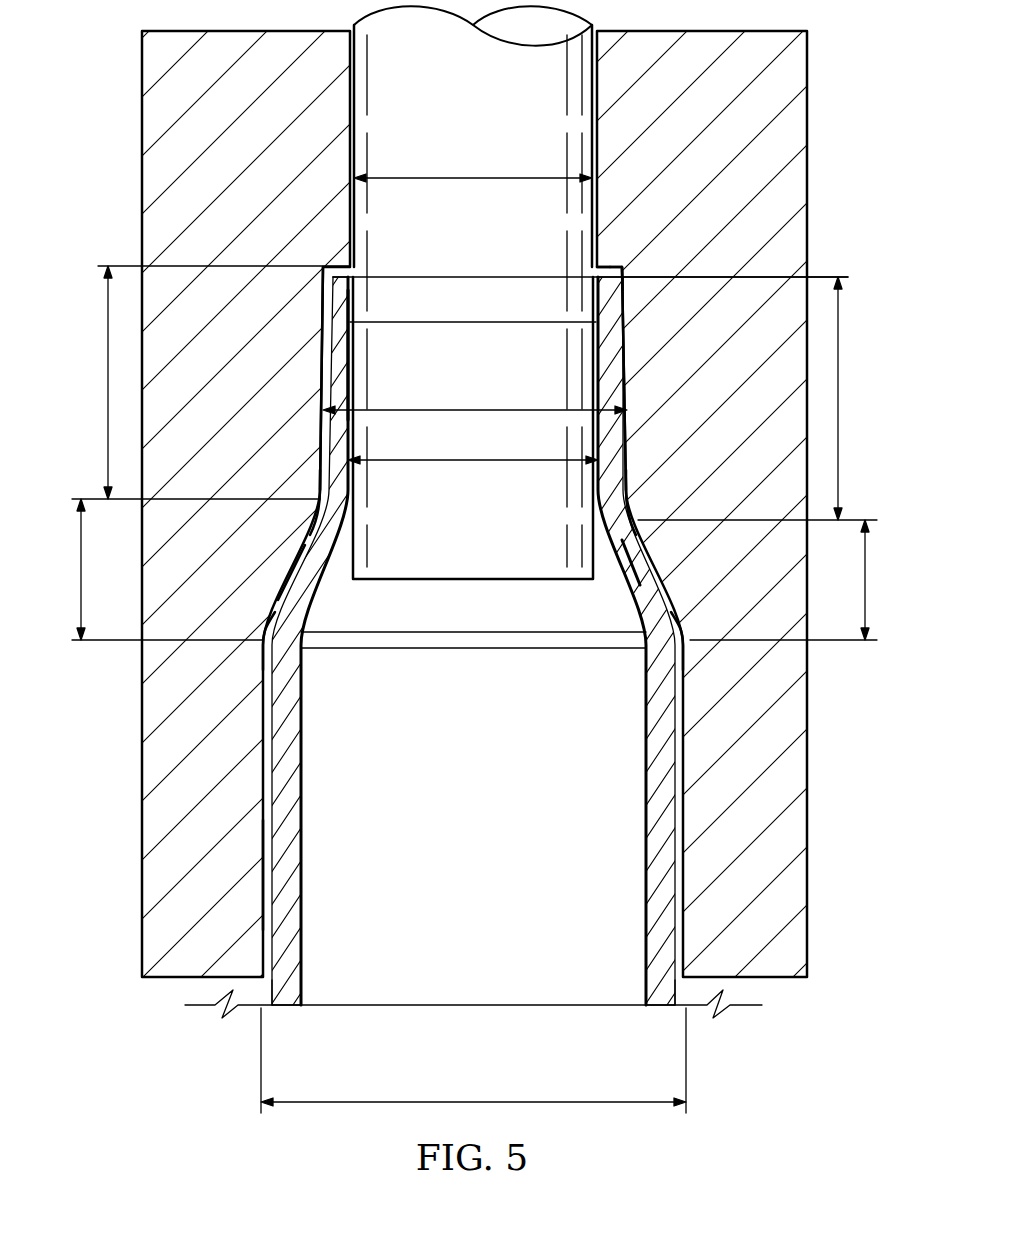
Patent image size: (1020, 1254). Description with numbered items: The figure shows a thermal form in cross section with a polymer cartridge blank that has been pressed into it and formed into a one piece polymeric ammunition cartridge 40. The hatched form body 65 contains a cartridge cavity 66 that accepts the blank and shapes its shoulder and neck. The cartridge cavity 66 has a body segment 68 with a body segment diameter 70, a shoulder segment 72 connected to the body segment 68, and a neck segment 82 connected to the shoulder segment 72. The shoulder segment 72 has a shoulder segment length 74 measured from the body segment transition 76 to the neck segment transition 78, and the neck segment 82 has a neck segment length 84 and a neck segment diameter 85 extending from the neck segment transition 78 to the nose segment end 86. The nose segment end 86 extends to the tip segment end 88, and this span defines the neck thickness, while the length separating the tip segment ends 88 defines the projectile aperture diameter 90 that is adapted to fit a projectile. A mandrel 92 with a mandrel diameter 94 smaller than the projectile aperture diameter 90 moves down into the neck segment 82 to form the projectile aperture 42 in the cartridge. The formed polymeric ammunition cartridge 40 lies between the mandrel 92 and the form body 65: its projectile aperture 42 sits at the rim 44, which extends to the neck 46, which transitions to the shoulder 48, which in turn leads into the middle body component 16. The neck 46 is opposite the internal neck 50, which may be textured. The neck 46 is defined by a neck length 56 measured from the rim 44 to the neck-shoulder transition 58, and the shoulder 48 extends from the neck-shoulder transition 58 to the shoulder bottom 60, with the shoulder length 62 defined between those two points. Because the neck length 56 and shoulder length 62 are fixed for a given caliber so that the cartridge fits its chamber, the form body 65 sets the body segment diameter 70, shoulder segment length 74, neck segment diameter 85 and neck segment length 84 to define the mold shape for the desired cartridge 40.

The middle body component 16 is at (638, 791).
The polymeric ammunition cartridge 40 is at (653, 1020).
The projectile aperture 42 is at (440, 277).
The rim 44 is at (610, 265).
The neck 46 is at (622, 372).
The shoulder 48 is at (642, 553).
The internal neck 50 is at (350, 350).
The neck length 56 is at (838, 398).
The neck-shoulder transition 58 is at (630, 505).
The shoulder bottom 60 is at (683, 648).
The shoulder length 62 is at (865, 576).
The die 65 is at (236, 138).
The cartridge cavity 66 is at (273, 1020).
The body segment 68 is at (262, 873).
The body segment diameter 70 is at (473, 1100).
The shoulder segment 72 is at (290, 583).
The shoulder segment length 74 is at (81, 570).
The body segment transition 76 is at (262, 650).
The neck segment transition 78 is at (320, 493).
The neck segment 82 is at (322, 368).
The neck segment length 84 is at (108, 382).
The neck segment diameter 85 is at (478, 410).
The nose segment end 86 is at (625, 266).
The tip segment end 88 is at (348, 264).
The projectile aperture diameter 90 is at (478, 462).
The mandrel 92 is at (404, 86).
The mandrel diameter 94 is at (478, 178).